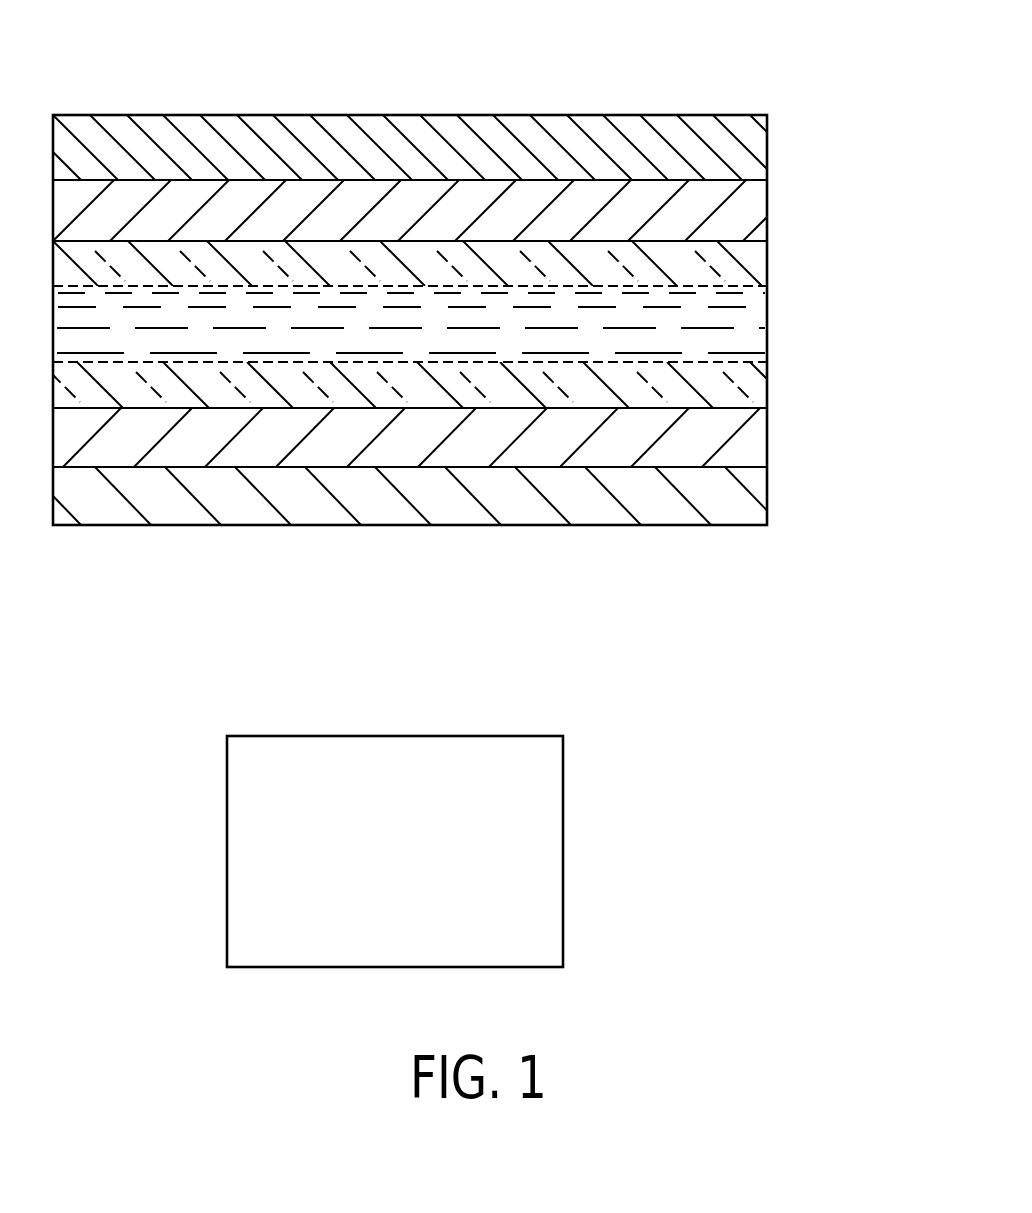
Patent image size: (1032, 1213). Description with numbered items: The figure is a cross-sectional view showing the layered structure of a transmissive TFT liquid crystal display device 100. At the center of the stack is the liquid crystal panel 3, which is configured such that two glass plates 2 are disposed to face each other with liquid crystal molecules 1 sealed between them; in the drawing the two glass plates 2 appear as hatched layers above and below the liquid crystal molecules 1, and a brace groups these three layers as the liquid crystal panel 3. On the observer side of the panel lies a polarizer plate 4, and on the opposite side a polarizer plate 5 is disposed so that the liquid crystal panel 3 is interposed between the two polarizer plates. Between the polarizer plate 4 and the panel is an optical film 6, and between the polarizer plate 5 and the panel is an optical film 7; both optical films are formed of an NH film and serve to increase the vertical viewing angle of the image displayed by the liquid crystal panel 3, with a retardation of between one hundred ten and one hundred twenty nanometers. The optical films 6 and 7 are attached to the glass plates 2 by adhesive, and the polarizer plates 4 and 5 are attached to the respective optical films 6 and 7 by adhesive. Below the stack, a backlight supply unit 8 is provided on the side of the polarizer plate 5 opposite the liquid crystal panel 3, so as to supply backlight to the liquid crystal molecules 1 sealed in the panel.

The transmissive TFT liquid crystal display device 100 is at (707, 100).
The polarizer plate 4 is at (753, 147).
The optical film 6 is at (753, 205).
The liquid crystal panel 3 is at (483, 323).
The glass plates 2 is at (752, 263).
The liquid crystal molecules 1 is at (452, 323).
The optical film 7 is at (752, 440).
The polarizer plate 5 is at (752, 497).
The backlight supply unit 8 is at (563, 848).